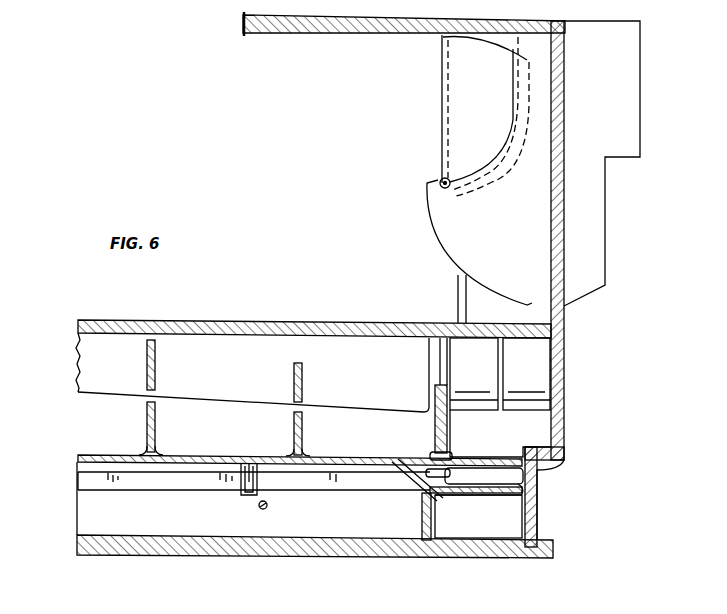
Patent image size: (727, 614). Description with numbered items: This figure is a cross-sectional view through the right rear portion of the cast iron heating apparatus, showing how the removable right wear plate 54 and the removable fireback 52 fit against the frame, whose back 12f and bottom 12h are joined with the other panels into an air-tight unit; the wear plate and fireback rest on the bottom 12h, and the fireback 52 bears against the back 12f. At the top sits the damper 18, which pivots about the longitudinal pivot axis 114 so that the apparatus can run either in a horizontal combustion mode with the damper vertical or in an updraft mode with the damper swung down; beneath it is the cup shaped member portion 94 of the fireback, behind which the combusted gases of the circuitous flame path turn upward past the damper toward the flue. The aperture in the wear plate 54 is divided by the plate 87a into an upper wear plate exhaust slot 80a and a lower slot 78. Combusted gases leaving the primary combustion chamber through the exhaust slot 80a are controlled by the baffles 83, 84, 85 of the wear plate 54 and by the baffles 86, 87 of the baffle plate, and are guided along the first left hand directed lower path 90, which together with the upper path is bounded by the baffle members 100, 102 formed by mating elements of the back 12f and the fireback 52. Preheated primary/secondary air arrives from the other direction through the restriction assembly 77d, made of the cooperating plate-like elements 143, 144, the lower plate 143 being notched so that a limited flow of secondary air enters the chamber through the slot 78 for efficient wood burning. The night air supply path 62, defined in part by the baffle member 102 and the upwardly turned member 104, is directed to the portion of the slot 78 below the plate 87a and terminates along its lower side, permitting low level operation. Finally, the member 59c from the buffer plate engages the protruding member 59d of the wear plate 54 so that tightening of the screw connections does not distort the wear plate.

The damper 18 is at (438, 106).
The longitudinal pivot axis 114 is at (451, 189).
The cup shaped member portion 94 is at (433, 240).
The fireback 52 is at (458, 296).
The right wear plate 54 is at (246, 320).
The wear plate exhaust slot 80a is at (135, 424).
The baffle 83 is at (147, 362).
The baffle 84 is at (293, 383).
The baffle 86 is at (155, 429).
The baffle 87 is at (303, 431).
The baffle 85 is at (433, 398).
The plate 87a is at (78, 457).
The slot 78 is at (205, 468).
The member 59c is at (260, 480).
The protruding member 59d is at (240, 492).
The upwardly turned member 104 is at (402, 483).
The restriction assembly 77d is at (419, 507).
The lower plate 143 is at (440, 524).
The plate-like element 144 is at (436, 506).
The night air supply path 62 is at (505, 478).
The back 12f is at (538, 515).
The bottom 12h is at (291, 555).
The baffle member 100 is at (490, 372).
The baffle member 102 is at (540, 372).
The lower path 90 is at (500, 441).